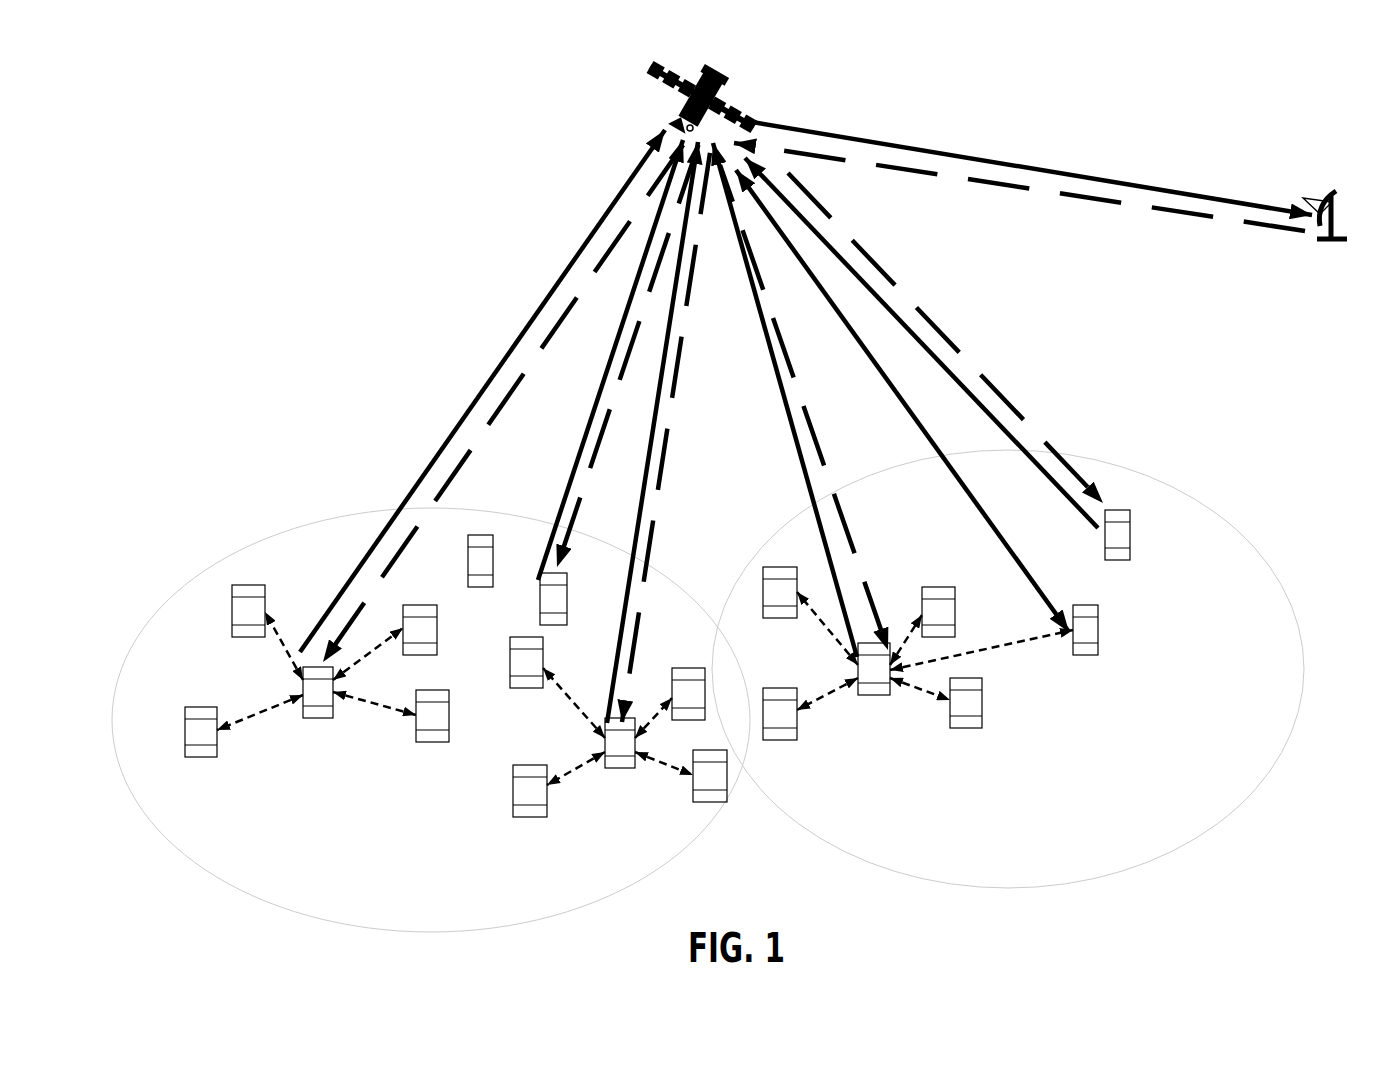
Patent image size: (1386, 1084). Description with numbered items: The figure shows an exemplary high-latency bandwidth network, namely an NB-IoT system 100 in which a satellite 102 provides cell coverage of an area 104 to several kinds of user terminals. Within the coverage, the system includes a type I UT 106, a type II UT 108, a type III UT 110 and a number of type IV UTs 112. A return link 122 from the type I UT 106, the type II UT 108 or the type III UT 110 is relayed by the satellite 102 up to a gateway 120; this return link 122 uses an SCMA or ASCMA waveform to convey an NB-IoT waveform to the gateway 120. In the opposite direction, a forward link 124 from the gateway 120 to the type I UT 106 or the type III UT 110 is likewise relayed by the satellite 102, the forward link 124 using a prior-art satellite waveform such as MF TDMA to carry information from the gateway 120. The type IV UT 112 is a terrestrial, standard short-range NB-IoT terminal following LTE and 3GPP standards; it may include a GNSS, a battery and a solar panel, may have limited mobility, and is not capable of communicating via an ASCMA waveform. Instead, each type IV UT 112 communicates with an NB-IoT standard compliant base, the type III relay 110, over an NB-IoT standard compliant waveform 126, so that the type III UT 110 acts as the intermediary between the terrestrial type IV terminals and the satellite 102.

The NB-IoT system 100 is at (1110, 78).
The satellite 102 is at (722, 76).
The area 104 is at (1180, 491).
The type I UT 106 is at (1130, 540).
The type II UT 108 is at (1100, 642).
The type III UT 110 is at (880, 640).
The type IV UT 112 is at (210, 752).
The gateway 120 is at (1306, 196).
The return link 122 is at (870, 136).
The forward link 124 is at (1073, 197).
The NB-IoT standard compliant waveform 126 is at (270, 712).